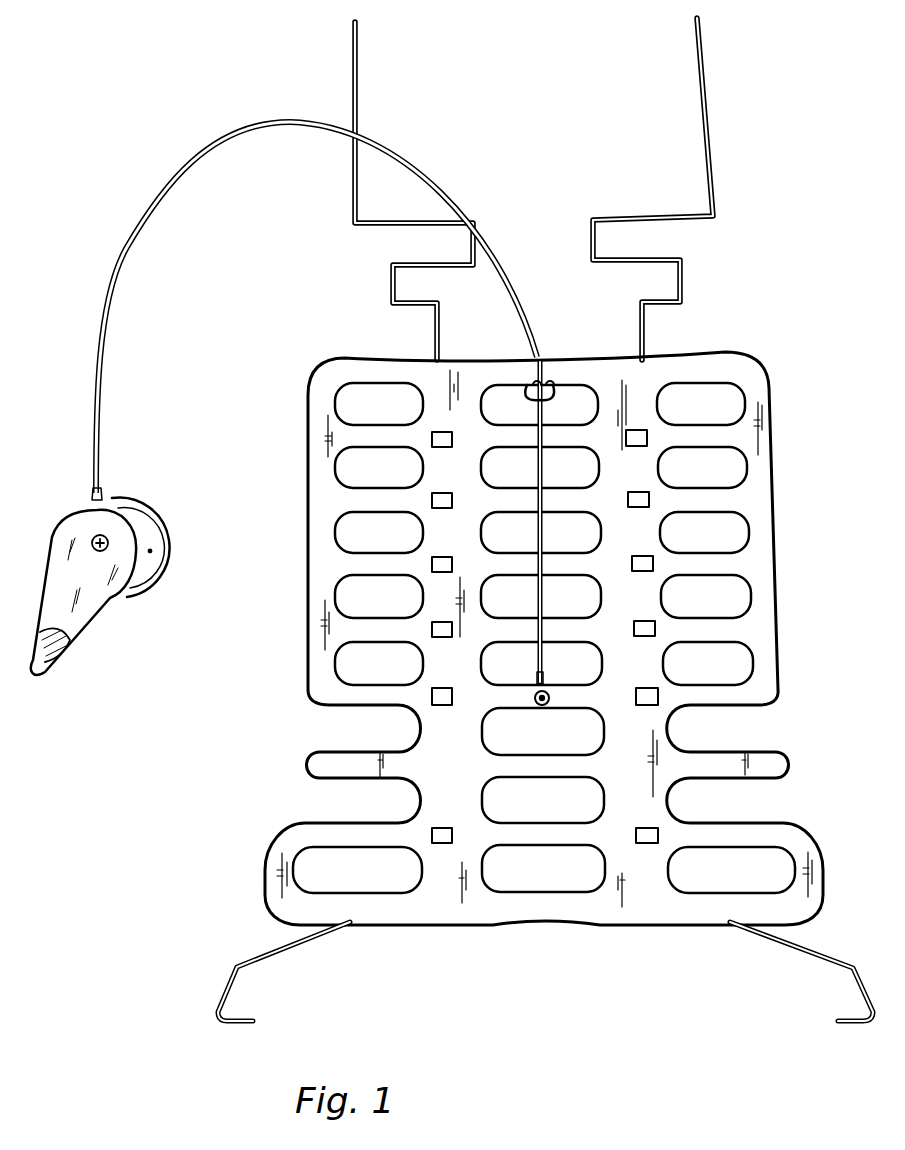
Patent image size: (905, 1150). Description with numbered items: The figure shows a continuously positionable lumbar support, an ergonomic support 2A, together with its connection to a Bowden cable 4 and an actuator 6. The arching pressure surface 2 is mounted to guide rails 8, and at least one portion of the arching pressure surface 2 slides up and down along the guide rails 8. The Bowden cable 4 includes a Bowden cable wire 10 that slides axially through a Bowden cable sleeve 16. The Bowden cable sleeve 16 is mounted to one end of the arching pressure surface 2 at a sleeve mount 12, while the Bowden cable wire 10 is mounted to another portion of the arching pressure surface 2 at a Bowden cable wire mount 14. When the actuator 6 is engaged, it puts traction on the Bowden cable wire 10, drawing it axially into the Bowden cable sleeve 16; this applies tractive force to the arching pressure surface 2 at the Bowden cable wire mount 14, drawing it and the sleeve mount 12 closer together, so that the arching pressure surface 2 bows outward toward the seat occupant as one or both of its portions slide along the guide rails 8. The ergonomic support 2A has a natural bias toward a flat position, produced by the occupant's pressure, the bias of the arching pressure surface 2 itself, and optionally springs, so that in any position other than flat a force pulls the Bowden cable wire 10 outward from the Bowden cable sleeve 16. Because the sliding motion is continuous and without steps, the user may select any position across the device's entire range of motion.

The arching pressure surface 2 is at (752, 492).
The ergonomic support 2A is at (296, 493).
The Bowden cable 4 is at (178, 180).
The actuator 6 is at (82, 516).
The guide rails 8 is at (706, 66).
The Bowden cable wire 10 is at (540, 528).
The sleeve mount 12 is at (546, 405).
The Bowden cable wire mount 14 is at (536, 685).
The Bowden cable sleeve 16 is at (126, 243).